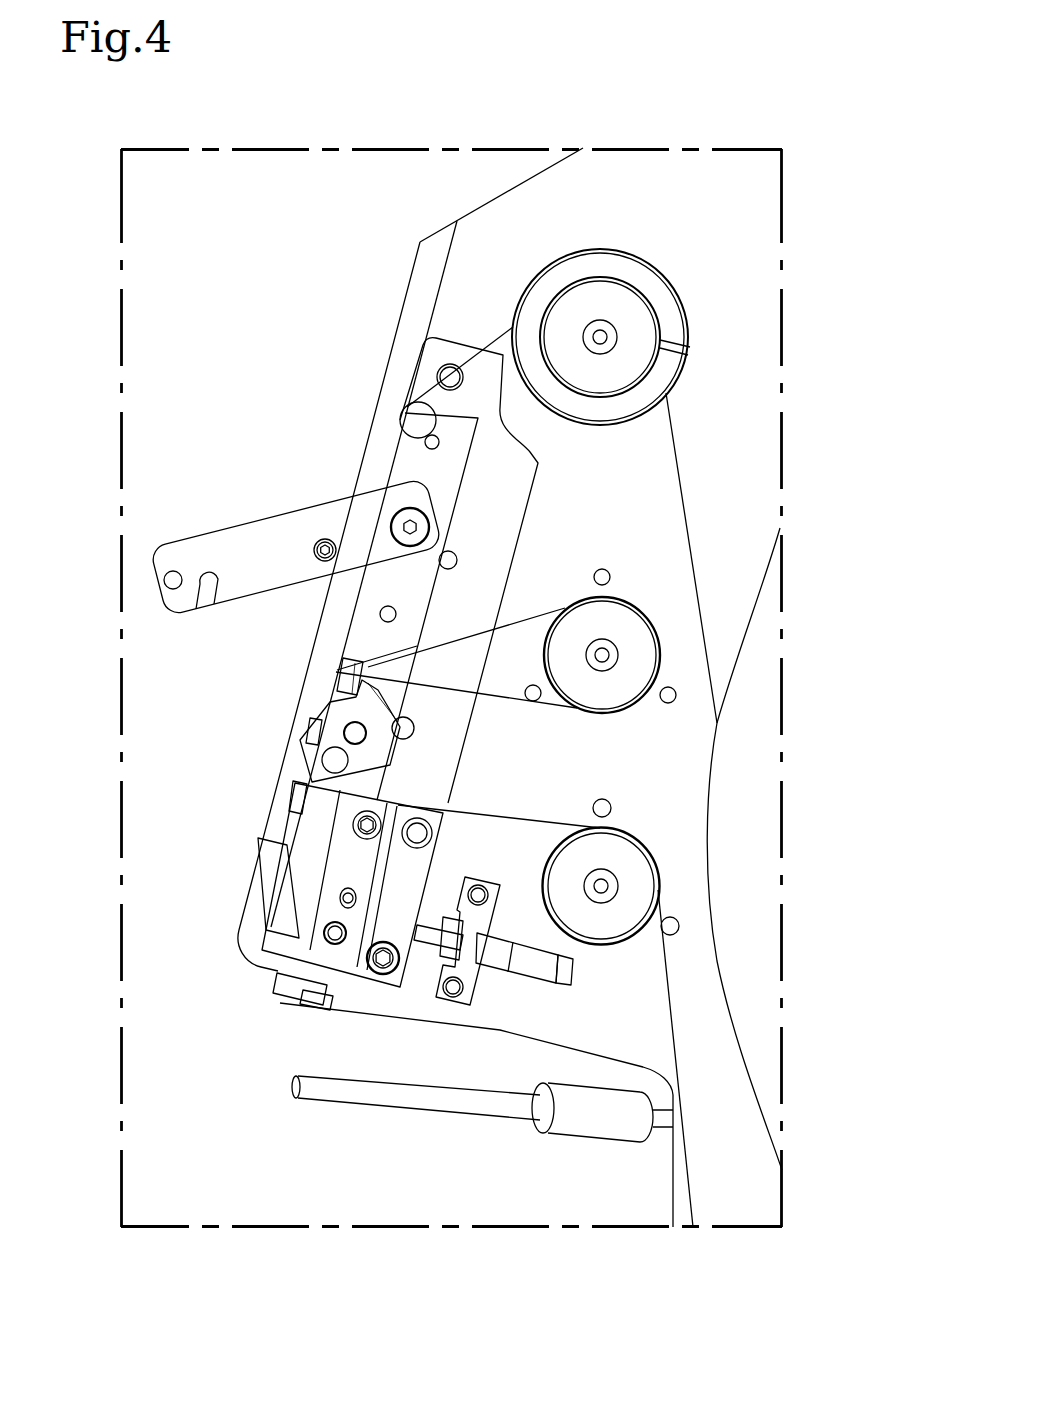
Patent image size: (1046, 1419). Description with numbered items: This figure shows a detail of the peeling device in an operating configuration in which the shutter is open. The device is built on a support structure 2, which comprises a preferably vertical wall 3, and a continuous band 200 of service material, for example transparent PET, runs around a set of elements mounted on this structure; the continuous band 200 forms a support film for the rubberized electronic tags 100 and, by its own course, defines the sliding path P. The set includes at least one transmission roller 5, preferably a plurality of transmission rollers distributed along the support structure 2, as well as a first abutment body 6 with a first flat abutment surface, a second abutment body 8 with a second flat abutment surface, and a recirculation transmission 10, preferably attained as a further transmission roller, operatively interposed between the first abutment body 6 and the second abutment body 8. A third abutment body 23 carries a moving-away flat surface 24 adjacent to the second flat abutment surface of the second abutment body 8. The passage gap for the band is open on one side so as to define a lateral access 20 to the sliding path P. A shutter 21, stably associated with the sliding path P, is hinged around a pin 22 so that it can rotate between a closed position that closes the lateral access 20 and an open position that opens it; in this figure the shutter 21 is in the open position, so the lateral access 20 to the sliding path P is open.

The support structure 2 is at (737, 228).
The vertical wall 3 is at (732, 296).
The transmission roller 5 is at (616, 298).
The first abutment body 6 is at (410, 462).
The second abutment body 8 is at (335, 730).
The recirculation transmission 10 is at (633, 643).
The lateral access 20 is at (310, 666).
The shutter 21 is at (237, 548).
The pin 22 is at (403, 523).
The third abutment body 23 is at (288, 912).
The moving-away flat surface 24 is at (288, 850).
The rubberized electronic tag 100 is at (302, 723).
The continuous band 200 is at (685, 473).
The sliding path P is at (494, 328).